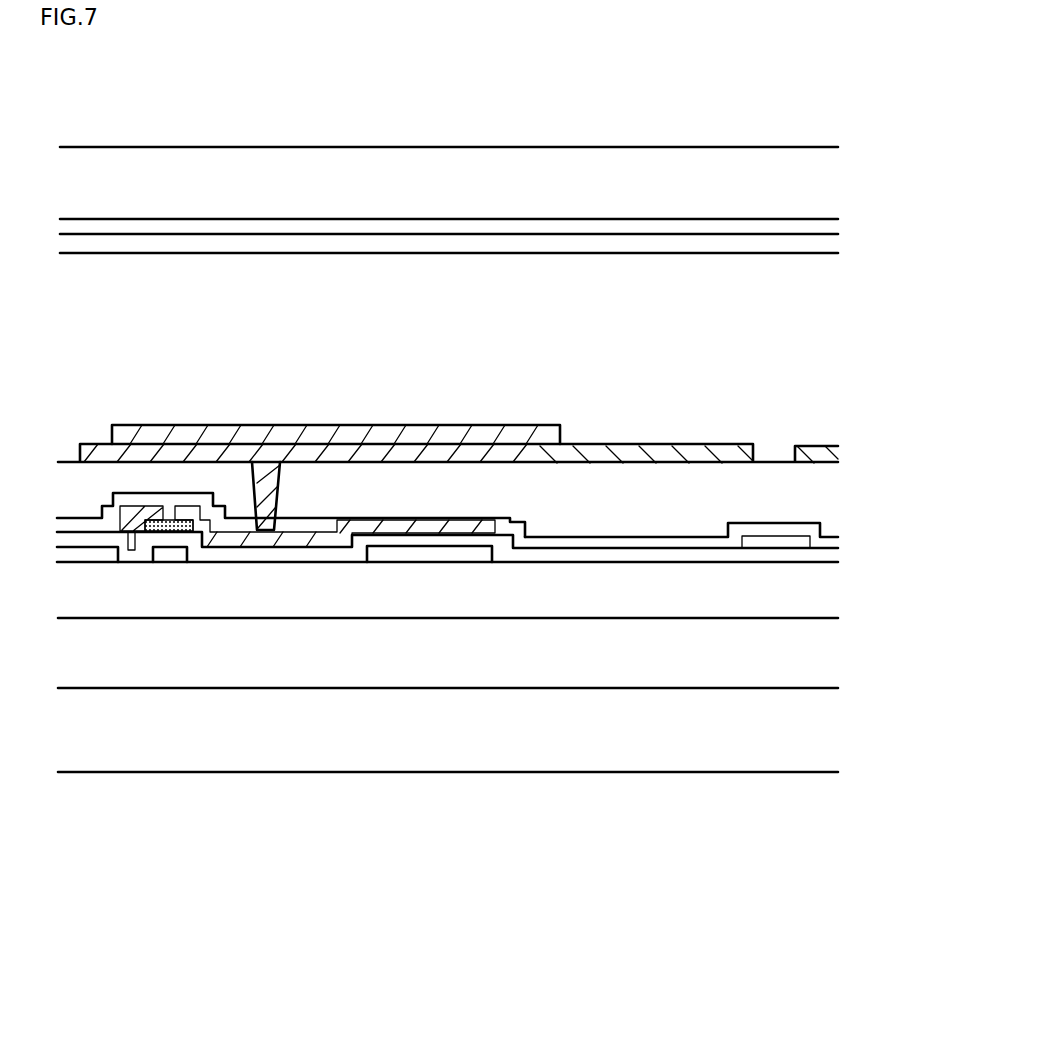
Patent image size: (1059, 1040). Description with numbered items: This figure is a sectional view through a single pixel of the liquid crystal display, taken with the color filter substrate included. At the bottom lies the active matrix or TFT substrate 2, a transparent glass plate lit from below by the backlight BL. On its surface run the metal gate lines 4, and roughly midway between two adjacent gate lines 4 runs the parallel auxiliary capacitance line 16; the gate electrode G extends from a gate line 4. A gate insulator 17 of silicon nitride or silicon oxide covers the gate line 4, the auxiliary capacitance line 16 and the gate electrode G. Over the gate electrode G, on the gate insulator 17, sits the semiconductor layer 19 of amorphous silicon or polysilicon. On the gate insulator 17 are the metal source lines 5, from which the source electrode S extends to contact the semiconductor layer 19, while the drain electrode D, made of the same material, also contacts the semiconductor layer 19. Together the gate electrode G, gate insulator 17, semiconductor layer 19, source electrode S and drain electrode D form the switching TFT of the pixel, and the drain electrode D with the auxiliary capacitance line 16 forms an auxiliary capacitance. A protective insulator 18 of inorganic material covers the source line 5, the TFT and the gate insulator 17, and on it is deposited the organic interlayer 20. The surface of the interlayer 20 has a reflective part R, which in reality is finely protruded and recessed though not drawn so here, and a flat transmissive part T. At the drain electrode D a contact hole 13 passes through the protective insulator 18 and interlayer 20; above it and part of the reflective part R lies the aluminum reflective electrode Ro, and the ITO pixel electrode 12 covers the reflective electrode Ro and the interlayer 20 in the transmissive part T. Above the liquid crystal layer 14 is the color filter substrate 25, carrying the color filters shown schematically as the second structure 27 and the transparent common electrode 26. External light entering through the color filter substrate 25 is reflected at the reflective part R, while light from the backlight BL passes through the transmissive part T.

The color filter substrate 25 is at (487, 187).
The second structure 27 is at (668, 227).
The common electrode 26 is at (712, 245).
The liquid crystal layer 14 is at (602, 339).
The reflective part R is at (184, 387).
The contact hole 13 is at (270, 480).
The reflective electrode Ro is at (417, 453).
The pixel electrode 12 is at (470, 430).
The transmissive part T is at (673, 405).
The interlayer 20 is at (662, 519).
The protective insulator 18 is at (823, 542).
The gate insulator 17 is at (827, 558).
The source line 5 is at (787, 545).
The gate line 4 is at (73, 553).
The source electrode S is at (133, 528).
The gate electrode G is at (162, 553).
The semiconductor layer 19 is at (180, 528).
The drain electrode D is at (240, 535).
The thin film transistor TFT is at (262, 829).
The auxiliary capacitance line 16 is at (438, 555).
The active matrix substrate 2 is at (560, 597).
The backlight BL is at (448, 730).